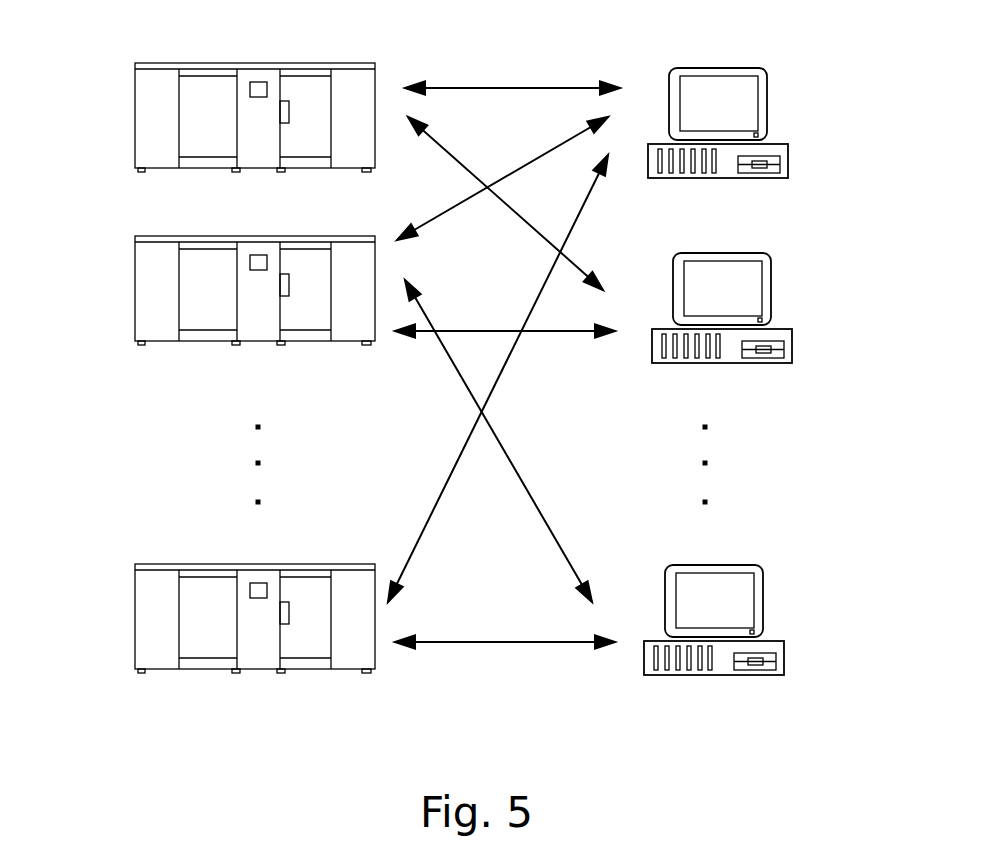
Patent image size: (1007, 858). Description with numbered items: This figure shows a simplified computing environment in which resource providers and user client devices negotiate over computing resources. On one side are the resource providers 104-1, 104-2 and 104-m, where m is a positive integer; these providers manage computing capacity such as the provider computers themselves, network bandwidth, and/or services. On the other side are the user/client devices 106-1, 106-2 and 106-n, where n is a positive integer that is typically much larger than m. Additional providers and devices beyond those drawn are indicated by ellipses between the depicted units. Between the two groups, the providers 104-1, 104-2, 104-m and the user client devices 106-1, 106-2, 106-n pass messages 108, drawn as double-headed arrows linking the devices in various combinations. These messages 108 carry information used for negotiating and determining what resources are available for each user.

The resource provider 104-1 is at (135, 117).
The resource provider 104-2 is at (135, 277).
The resource provider 104-m is at (135, 621).
The user client device 106-1 is at (767, 132).
The user client device 106-2 is at (772, 292).
The user client device 106-n is at (763, 616).
The messages 108 is at (504, 365).